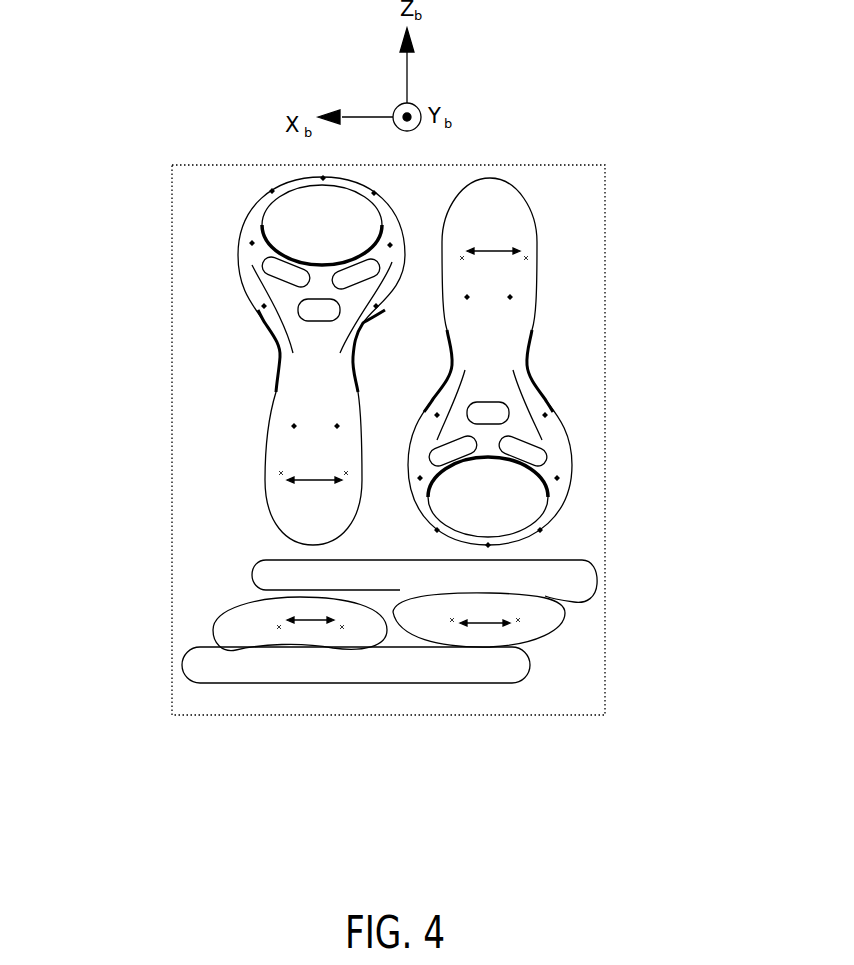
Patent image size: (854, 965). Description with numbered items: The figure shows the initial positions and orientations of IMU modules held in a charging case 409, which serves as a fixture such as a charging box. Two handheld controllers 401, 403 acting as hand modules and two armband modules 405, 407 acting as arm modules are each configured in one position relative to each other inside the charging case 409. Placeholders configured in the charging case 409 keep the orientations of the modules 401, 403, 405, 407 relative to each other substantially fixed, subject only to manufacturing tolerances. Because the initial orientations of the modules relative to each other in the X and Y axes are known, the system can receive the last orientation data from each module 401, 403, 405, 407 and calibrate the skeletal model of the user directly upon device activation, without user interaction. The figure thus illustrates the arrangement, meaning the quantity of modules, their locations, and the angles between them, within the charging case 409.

The handheld controller 401 is at (288, 378).
The handheld controller 403 is at (503, 368).
The armband module 405 is at (288, 602).
The armband module 407 is at (498, 602).
The charging case 409 is at (367, 716).